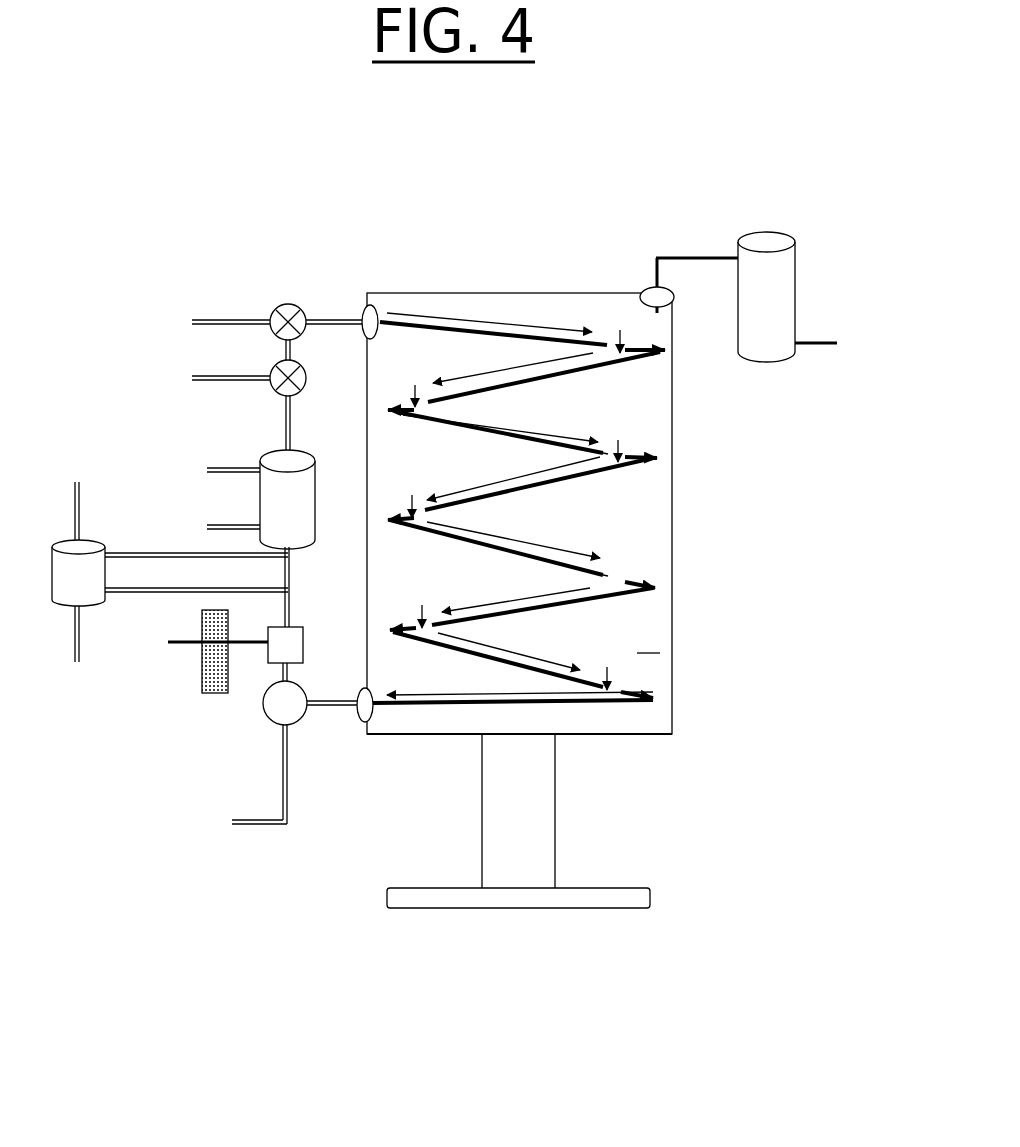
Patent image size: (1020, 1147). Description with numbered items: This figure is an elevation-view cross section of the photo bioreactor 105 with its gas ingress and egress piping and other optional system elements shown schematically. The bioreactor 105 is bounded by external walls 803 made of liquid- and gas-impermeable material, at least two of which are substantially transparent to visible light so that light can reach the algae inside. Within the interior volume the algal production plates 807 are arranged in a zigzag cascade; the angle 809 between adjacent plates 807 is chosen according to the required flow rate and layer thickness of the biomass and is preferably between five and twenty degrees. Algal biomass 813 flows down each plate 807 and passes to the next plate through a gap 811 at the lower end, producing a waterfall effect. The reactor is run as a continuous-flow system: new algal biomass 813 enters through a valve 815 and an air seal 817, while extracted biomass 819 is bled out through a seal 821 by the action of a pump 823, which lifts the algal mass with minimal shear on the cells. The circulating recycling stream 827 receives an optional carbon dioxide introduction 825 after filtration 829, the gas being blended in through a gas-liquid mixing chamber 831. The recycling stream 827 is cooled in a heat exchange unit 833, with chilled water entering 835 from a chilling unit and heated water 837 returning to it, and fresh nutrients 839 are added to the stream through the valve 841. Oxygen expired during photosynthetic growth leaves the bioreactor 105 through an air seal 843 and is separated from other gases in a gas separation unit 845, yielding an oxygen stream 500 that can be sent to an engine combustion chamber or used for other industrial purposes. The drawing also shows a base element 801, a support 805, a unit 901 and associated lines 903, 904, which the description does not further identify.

The photo bioreactor 105 is at (677, 553).
The oxygen stream 500 is at (837, 343).
The housing base wall 801 is at (627, 743).
The external walls 803 is at (660, 653).
The support pedestal 805 is at (558, 872).
The algal production plates 807 is at (642, 445).
The angle 809 is at (397, 413).
The gap 811 is at (608, 452).
The algal biomass 813 is at (254, 319).
The valve 815 is at (288, 302).
The air seal 817 is at (360, 338).
The extracted biomass 819 is at (229, 778).
The seal 821 is at (353, 727).
The pump 823 is at (258, 712).
The carbon dioxide gas introduction 825 is at (196, 643).
The recycling stream 827 is at (277, 420).
The filtration 829 is at (192, 682).
The gas-liquid mixing chamber 831 is at (298, 625).
The heat exchange unit 833 is at (287, 499).
The chilled water entering 835 is at (210, 468).
The heated water returning 837 is at (210, 528).
The fresh nutrients 839 is at (206, 377).
The valve 841 is at (307, 403).
The air seal 843 is at (642, 280).
The gas separation unit 845 is at (797, 273).
The controller 901 is at (170, 573).
The signal line 903 is at (72, 648).
The signal line 904 is at (73, 495).